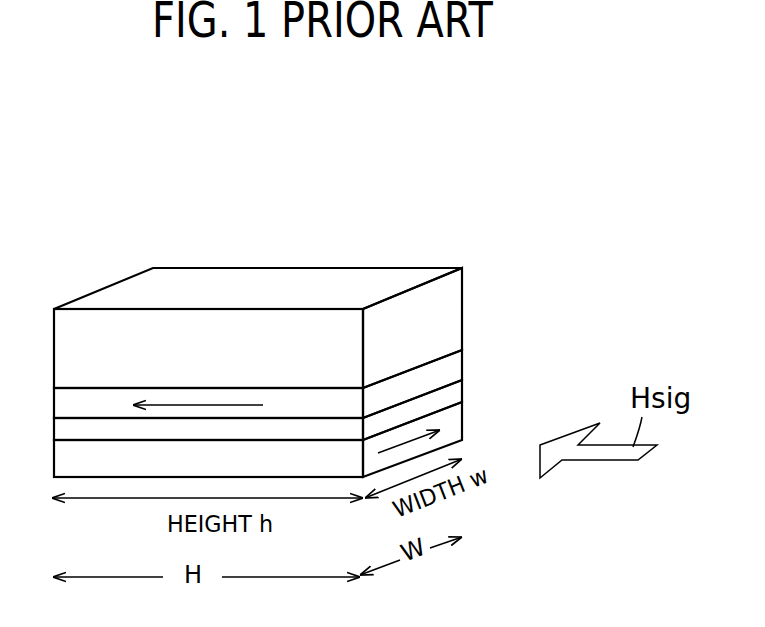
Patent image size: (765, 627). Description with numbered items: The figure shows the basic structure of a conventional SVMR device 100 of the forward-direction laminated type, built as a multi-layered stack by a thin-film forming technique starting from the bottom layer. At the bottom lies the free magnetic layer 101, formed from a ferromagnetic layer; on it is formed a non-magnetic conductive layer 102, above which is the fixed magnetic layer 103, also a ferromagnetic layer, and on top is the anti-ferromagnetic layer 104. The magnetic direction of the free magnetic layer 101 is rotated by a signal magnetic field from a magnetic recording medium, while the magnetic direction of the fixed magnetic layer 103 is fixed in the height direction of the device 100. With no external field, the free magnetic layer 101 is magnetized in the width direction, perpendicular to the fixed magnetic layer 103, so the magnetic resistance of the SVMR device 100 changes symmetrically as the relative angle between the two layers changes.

The SVMR device 100 is at (540, 200).
The free magnetic layer 101 is at (453, 427).
The non-magnetic conductive layer 102 is at (452, 393).
The fixed magnetic layer 103 is at (451, 366).
The anti-ferromagnetic layer 104 is at (453, 310).